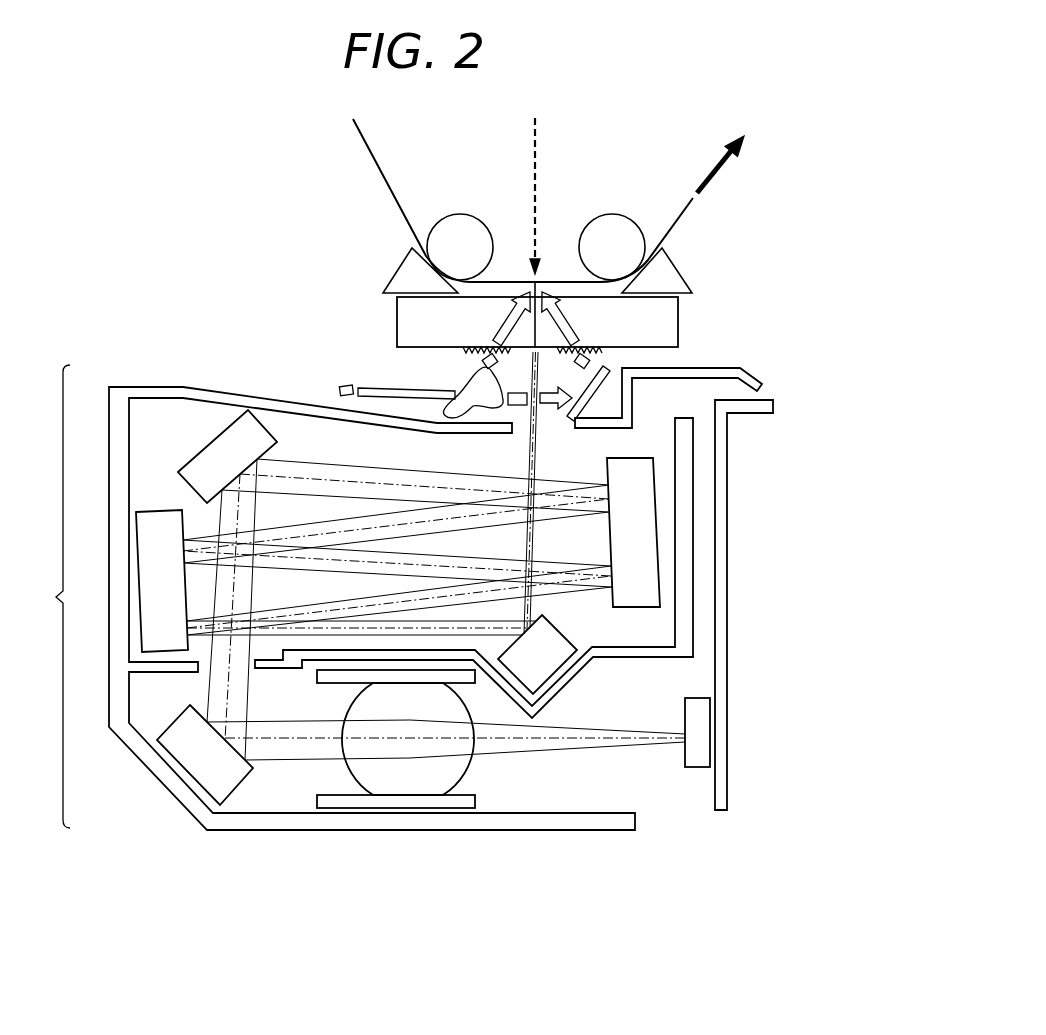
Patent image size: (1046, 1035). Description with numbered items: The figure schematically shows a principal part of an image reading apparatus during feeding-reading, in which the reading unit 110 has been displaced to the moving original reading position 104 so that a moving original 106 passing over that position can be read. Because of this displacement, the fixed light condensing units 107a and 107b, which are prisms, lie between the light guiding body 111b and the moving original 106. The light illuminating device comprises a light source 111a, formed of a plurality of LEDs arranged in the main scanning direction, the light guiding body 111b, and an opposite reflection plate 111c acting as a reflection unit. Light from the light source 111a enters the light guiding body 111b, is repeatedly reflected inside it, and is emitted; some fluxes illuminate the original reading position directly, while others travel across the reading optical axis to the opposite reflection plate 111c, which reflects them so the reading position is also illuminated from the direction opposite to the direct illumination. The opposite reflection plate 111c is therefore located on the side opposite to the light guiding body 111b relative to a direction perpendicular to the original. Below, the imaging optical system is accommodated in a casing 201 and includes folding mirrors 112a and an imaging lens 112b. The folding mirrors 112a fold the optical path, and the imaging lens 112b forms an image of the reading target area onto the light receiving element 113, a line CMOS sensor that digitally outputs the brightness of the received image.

The moving original reading position 104 is at (537, 162).
The moving original 106 is at (683, 220).
The fixed light condensing unit 107a is at (482, 345).
The fixed light condensing unit 107b is at (588, 347).
The reading unit 110 is at (45, 596).
The light source 111a is at (338, 390).
The light guiding body 111b is at (453, 395).
The opposite reflection plate 111c is at (596, 388).
The folding mirror 112a is at (218, 450).
The imaging lens 112b is at (413, 755).
The light receiving element 113 is at (705, 733).
The casing 201 is at (687, 622).